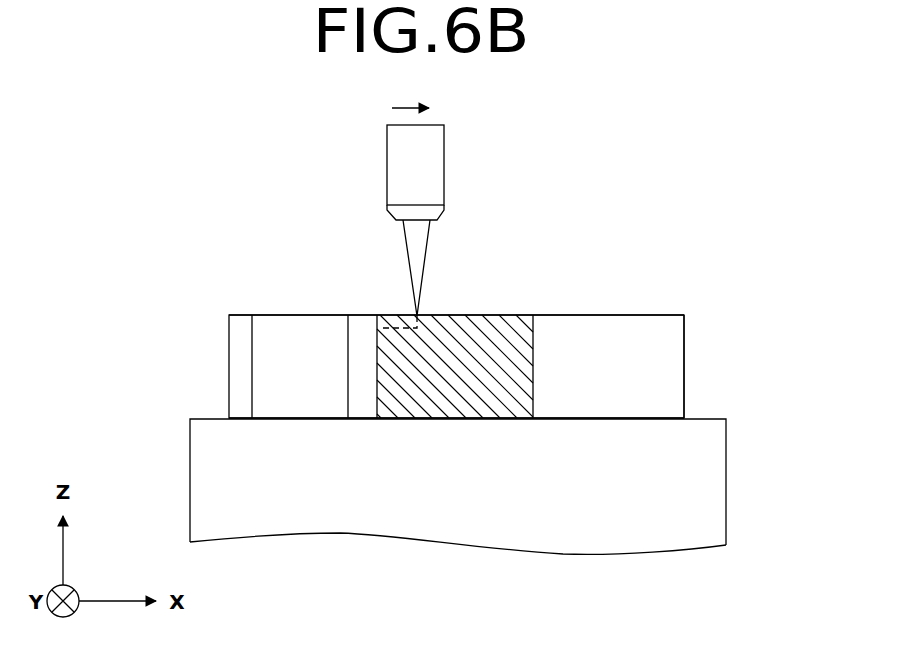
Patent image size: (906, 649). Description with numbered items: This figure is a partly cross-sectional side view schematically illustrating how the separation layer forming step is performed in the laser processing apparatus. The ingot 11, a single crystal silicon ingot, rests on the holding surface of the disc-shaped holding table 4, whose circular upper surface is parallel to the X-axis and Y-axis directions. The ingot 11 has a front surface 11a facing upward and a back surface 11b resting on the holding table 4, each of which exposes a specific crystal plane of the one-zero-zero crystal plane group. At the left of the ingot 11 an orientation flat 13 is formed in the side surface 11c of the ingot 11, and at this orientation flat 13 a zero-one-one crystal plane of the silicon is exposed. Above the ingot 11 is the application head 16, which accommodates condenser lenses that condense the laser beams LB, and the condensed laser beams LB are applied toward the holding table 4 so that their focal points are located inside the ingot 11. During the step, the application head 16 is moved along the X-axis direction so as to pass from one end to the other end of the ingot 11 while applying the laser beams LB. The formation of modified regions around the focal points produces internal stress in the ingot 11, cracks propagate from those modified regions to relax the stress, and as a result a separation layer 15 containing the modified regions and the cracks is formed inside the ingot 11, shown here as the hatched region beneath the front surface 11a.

The holding table 4 is at (715, 517).
The ingot 11 is at (224, 286).
The front surface 11a is at (607, 313).
The back surface 11b is at (656, 418).
The side surface 11c is at (670, 342).
The orientation flat 13 is at (295, 327).
The separation layer 15 is at (395, 325).
The application head 16 is at (390, 162).
The laser beams LB is at (428, 248).